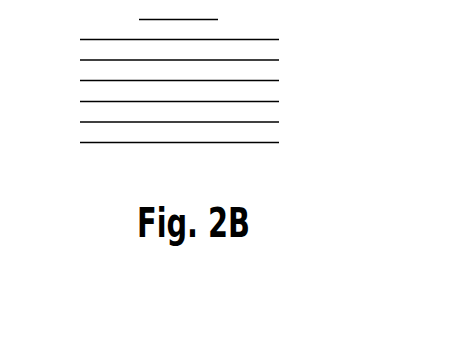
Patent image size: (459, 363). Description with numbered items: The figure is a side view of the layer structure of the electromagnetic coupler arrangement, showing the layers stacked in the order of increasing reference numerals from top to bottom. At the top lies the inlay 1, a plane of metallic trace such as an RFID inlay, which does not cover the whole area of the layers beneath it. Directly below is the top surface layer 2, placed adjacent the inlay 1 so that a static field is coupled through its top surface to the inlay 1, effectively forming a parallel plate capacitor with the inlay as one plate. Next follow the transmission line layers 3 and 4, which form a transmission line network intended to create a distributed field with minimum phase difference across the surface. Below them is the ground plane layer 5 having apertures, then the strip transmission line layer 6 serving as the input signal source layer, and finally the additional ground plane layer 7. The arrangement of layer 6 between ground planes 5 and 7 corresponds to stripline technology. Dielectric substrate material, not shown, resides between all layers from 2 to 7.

The inlay 1 is at (188, 20).
The top surface layer 2 is at (194, 40).
The transmission line layer 3 is at (194, 61).
The transmission line layer 4 is at (194, 81).
The ground plane layer 5 is at (194, 102).
The strip transmission line layer 6 is at (194, 123).
The additional ground plane layer 7 is at (194, 143).